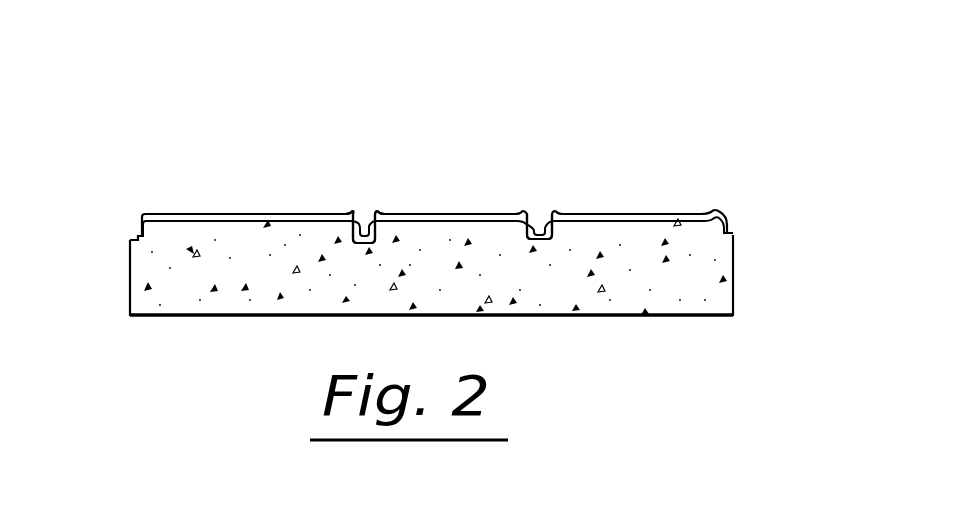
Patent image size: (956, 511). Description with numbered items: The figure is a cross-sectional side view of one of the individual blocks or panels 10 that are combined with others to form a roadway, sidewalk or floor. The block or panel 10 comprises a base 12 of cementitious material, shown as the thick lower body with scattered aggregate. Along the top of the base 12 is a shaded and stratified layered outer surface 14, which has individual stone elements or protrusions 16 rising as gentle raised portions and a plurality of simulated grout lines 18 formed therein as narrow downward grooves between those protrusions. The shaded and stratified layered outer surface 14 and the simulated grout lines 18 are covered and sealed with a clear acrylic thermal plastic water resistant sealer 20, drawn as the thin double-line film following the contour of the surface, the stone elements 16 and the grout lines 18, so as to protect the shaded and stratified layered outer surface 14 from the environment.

The block or panel 10 is at (642, 143).
The base 12 is at (733, 280).
The shaded and stratified layered outer surface 14 is at (399, 172).
The stone element or protrusion 16 is at (440, 215).
The simulated grout line 18 is at (122, 210).
The clear acrylic thermal plastic water resistant sealer 20 is at (230, 214).